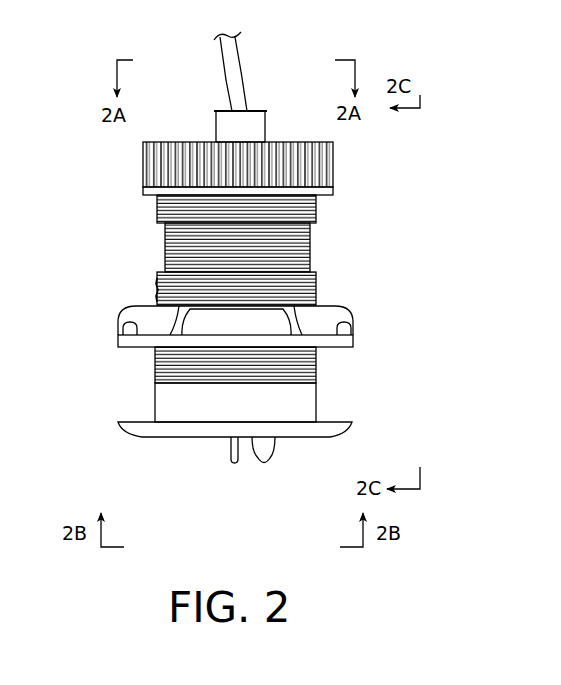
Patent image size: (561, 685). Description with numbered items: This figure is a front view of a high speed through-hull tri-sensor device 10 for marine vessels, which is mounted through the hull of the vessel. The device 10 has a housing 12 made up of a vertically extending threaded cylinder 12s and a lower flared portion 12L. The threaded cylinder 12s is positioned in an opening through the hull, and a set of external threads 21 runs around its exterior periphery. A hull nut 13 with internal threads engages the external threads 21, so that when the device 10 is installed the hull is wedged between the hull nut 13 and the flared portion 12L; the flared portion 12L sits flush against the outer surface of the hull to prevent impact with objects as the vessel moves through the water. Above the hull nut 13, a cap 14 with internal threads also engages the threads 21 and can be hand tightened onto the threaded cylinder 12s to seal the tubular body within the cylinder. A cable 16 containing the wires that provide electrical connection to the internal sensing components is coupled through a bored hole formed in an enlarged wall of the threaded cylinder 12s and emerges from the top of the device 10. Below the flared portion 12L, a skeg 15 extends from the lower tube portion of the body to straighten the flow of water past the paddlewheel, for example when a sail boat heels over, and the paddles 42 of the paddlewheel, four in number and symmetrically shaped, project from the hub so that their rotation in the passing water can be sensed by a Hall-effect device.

The high speed through-hull tri-sensor device 10 is at (88, 238).
The housing 12 is at (315, 213).
The threaded cylinder 12s is at (315, 290).
The lower flared portion 12L is at (333, 436).
The hull nut 13 is at (350, 313).
The cap 14 is at (328, 167).
The skeg 15 is at (228, 458).
The cable 16 is at (242, 58).
The external threads 21 is at (155, 290).
The paddles 42 is at (263, 463).